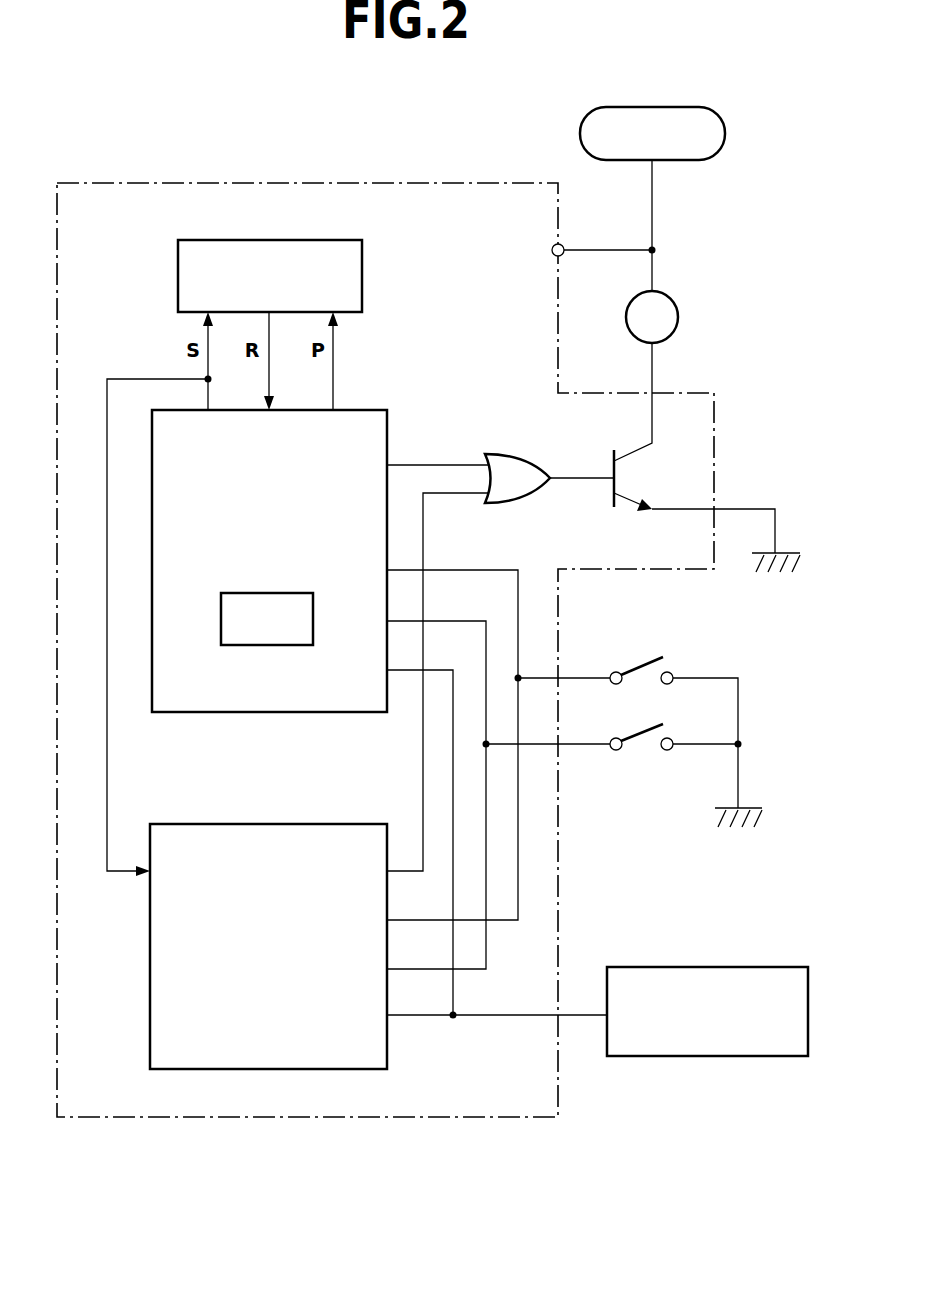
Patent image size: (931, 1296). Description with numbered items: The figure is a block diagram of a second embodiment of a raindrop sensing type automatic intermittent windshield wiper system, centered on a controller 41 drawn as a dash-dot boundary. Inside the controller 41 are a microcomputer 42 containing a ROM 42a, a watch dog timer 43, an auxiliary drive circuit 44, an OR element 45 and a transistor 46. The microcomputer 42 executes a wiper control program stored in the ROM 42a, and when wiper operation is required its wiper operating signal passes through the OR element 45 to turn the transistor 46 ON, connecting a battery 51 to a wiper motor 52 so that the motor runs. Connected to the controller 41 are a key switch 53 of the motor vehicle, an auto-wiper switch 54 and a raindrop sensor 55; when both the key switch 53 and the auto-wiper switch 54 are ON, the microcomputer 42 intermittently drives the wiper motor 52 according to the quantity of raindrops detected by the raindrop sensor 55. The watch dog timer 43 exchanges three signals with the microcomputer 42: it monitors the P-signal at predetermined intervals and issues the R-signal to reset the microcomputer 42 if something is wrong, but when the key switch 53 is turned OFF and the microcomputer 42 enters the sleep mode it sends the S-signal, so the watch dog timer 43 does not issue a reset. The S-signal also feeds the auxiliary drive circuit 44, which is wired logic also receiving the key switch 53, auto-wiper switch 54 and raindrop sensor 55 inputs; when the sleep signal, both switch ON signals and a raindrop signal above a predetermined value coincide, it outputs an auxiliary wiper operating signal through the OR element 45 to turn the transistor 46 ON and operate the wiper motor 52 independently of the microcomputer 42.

The controller 41 is at (318, 176).
The microcomputer 42 is at (372, 410).
The ROM 42a is at (292, 593).
The watch dog timer 43 is at (362, 250).
The auxiliary drive circuit 44 is at (285, 824).
The OR element 45 is at (512, 455).
The transistor 46 is at (612, 500).
The battery 51 is at (690, 107).
The wiper motor 52 is at (677, 307).
The key switch 53 is at (640, 661).
The auto-wiper switch 54 is at (638, 751).
The raindrop sensor 55 is at (727, 967).